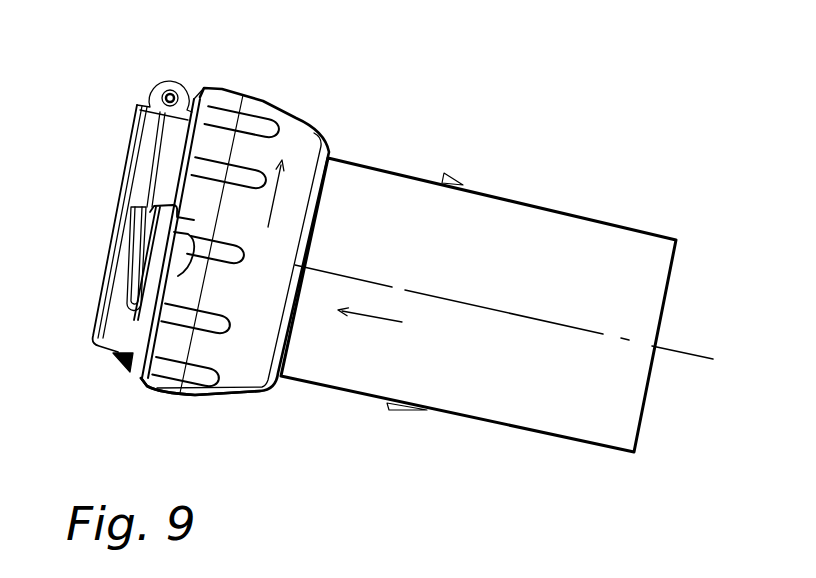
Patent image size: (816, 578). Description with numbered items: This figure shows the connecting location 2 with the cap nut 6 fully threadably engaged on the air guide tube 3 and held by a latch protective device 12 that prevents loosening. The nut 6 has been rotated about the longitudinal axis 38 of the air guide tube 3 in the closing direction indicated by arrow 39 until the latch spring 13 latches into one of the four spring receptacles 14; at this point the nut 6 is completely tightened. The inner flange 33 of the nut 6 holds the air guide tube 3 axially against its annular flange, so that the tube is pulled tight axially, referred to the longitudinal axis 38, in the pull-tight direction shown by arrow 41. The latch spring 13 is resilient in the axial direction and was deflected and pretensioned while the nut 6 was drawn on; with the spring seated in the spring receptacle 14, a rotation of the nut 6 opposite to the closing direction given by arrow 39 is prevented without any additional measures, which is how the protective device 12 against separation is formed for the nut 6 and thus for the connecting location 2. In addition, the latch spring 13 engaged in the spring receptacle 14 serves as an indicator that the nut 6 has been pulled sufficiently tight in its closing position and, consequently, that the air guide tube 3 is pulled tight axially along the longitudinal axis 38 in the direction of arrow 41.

The connecting location 2 is at (245, 413).
The air guide tube 3 is at (565, 240).
The nut 6 is at (300, 150).
The protective device 12 is at (140, 205).
The latch spring 13 is at (157, 237).
The spring receptacle 14 is at (178, 262).
The inner flange 33 is at (315, 228).
The longitudinal axis 38 is at (685, 350).
The arrow (closing direction) 39 is at (268, 203).
The arrow (pull-tight direction) 41 is at (378, 320).